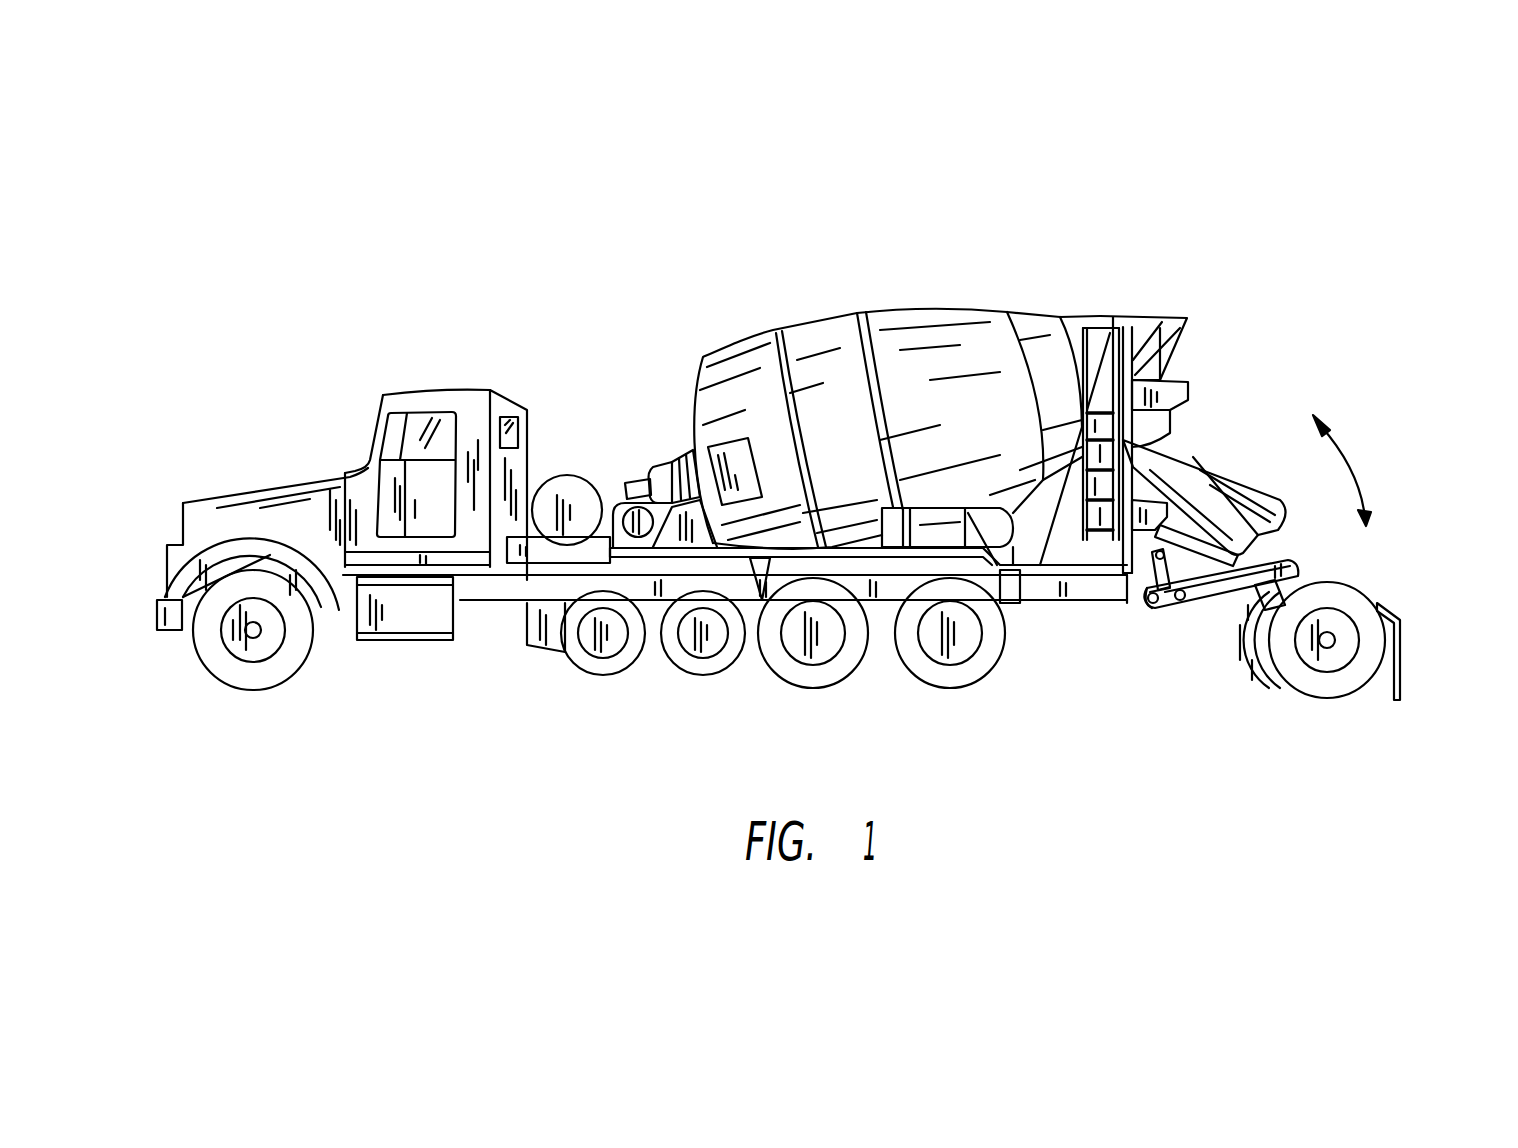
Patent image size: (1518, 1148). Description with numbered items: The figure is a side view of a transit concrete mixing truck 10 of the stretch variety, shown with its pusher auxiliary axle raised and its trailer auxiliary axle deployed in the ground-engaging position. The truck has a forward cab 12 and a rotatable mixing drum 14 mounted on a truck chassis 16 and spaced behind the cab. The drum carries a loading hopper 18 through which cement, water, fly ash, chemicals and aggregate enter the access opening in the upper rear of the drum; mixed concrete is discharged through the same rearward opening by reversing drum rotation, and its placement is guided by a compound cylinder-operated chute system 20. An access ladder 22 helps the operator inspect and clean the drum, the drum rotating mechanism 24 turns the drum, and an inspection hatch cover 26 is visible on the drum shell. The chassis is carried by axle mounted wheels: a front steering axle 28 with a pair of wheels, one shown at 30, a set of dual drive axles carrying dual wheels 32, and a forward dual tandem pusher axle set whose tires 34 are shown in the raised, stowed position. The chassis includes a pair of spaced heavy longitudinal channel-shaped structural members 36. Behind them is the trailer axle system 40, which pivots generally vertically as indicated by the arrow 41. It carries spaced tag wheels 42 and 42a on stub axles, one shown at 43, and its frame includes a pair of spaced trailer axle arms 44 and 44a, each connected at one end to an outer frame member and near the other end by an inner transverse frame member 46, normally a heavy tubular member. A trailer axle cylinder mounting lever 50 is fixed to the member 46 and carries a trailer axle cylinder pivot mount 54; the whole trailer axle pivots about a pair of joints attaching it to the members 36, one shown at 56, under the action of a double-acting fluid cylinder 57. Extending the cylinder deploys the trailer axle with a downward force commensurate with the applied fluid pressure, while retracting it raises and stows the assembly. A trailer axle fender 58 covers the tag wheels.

The transit concrete mixing truck 10 is at (476, 326).
The forward cab 12 is at (377, 420).
The rotatable mixing drum 14 is at (920, 310).
The truck chassis 16 is at (497, 601).
The loading hopper 18 is at (1153, 320).
The compound cylinder-operated chute system 20 is at (1240, 429).
The access ladder 22 is at (1090, 423).
The drum rotating mechanism 24 is at (624, 468).
The inspection hatch cover 26 is at (720, 447).
The front steering axle 28 is at (257, 640).
The front wheel 30 is at (305, 672).
The dual wheels 32 is at (833, 688).
The pusher axle tires 34 is at (627, 670).
The longitudinal structural members 36 is at (1053, 593).
The trailer axle system 40 is at (1314, 613).
The arrow 41 is at (1343, 460).
The tag wheel 42 is at (1333, 697).
The tag wheel 42a is at (1247, 670).
The stub axle 43 is at (1325, 648).
The trailer axle arm 44 is at (1292, 573).
The trailer axle arm 44a is at (1253, 563).
The inner transverse frame member 46 is at (1182, 603).
The trailer axle cylinder mounting lever 50 is at (1145, 600).
The trailer axle cylinder pivot mount 54 is at (1167, 558).
The pivot joint 56 is at (1153, 607).
The double-acting fluid cylinder 57 is at (1118, 553).
The trailer axle fender 58 is at (1400, 627).